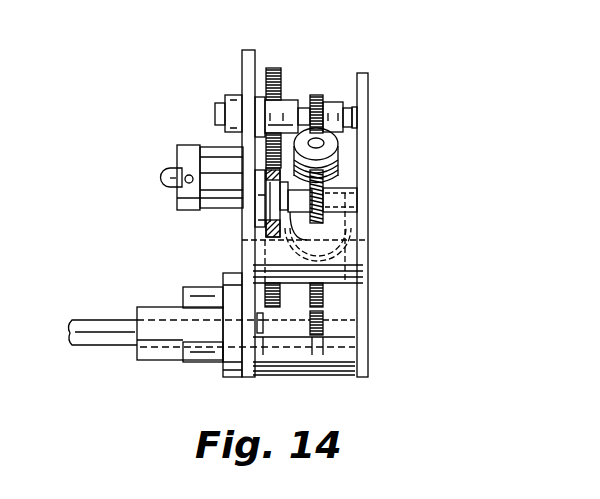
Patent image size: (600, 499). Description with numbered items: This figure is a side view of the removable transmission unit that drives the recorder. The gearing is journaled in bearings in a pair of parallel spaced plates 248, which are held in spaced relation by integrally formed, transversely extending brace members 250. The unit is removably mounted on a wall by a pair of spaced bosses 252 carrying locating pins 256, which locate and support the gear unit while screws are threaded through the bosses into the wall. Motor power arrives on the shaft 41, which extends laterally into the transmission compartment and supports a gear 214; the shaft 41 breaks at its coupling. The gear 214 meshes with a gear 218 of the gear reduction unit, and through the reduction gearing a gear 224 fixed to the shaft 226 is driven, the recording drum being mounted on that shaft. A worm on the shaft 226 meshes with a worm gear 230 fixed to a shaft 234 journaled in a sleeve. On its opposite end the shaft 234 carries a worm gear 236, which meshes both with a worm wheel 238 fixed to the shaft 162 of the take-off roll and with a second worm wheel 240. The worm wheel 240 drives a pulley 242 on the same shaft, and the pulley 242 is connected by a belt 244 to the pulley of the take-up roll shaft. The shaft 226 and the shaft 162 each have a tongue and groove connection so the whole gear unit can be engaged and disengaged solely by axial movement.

The shaft 41 is at (80, 324).
The shaft 162 is at (222, 114).
The gear 214 is at (320, 323).
The gear 218 is at (323, 296).
The gear 224 is at (271, 66).
The shaft 226 is at (184, 203).
The worm gear 230 is at (346, 217).
The shaft 234 is at (324, 143).
The worm gear 236 is at (338, 168).
The worm wheel 238 is at (317, 96).
The second worm wheel 240 is at (323, 223).
The pulley 242 is at (268, 197).
The belt 244 is at (266, 226).
The parallel spaced plates 248 is at (243, 56).
The brace members 250 is at (347, 259).
The bosses 252 is at (233, 378).
The locating pins 256 is at (191, 289).